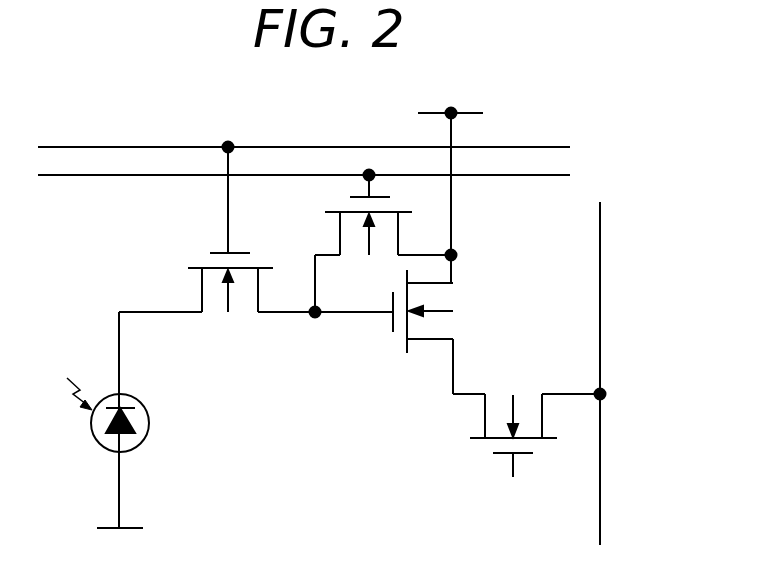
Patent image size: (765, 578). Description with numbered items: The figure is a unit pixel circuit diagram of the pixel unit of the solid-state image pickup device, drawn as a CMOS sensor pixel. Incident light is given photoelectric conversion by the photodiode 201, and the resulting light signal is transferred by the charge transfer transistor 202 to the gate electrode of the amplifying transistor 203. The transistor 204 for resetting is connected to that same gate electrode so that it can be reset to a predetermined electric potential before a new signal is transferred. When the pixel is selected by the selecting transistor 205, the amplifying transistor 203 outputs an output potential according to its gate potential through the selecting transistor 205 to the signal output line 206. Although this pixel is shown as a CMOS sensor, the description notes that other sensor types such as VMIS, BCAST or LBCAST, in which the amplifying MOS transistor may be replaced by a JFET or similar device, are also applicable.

The photodiode 201 is at (147, 437).
The charge transfer transistor 202 is at (222, 253).
The amplifying transistor 203 is at (392, 330).
The transistor for resetting 204 is at (350, 196).
The selecting transistor 205 is at (497, 455).
The signal output line 206 is at (601, 502).